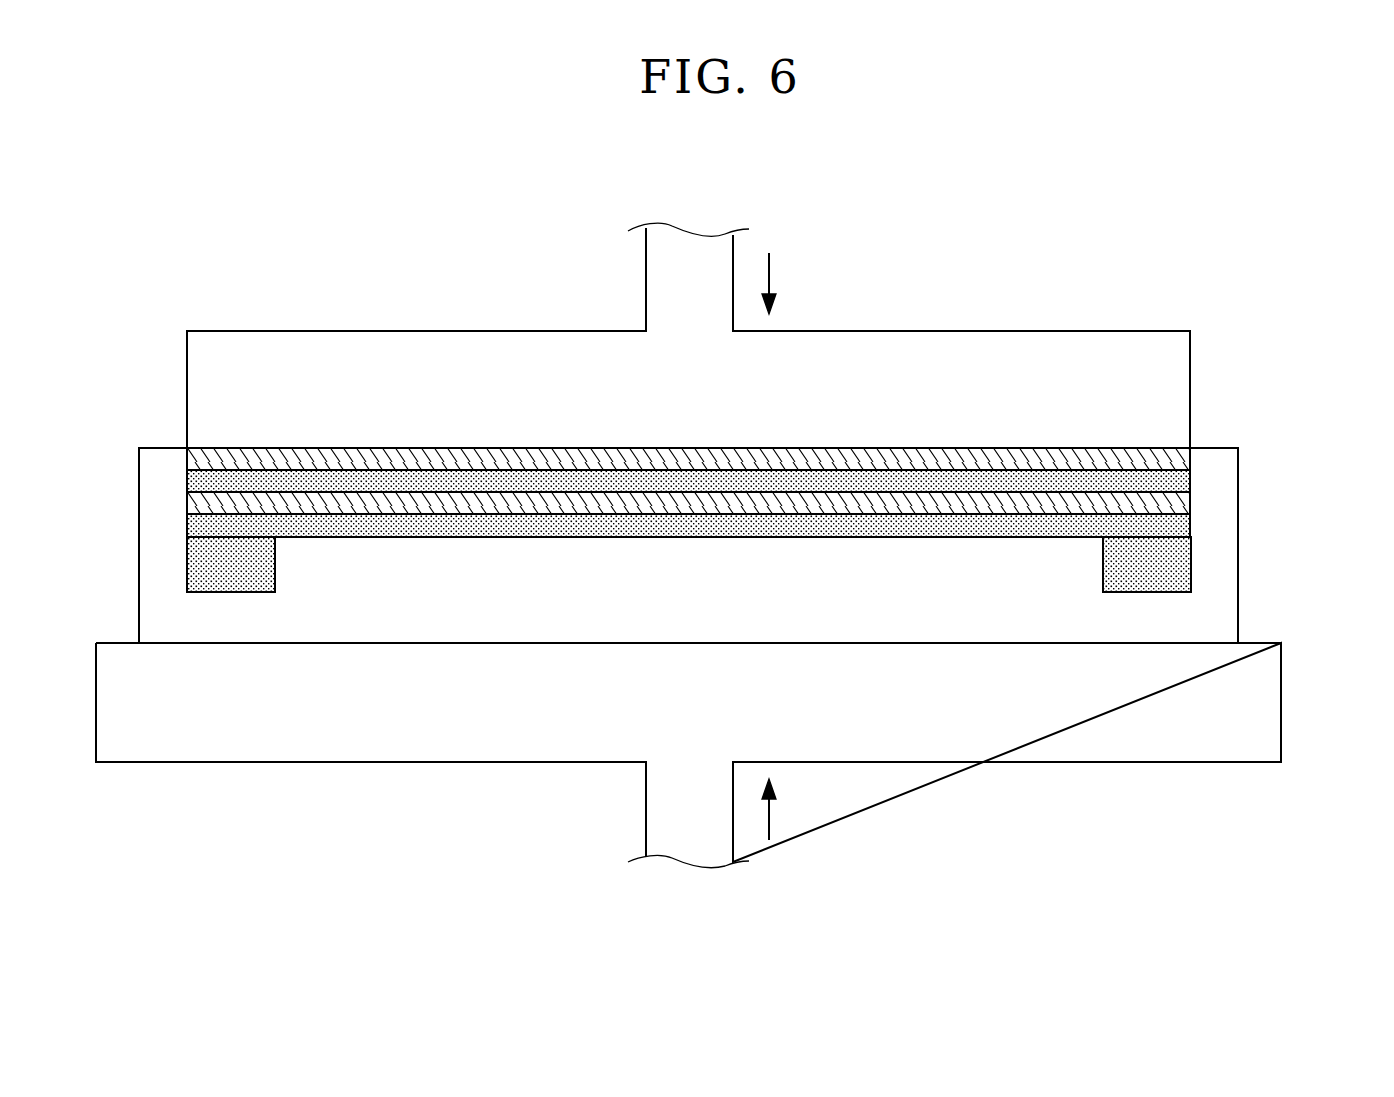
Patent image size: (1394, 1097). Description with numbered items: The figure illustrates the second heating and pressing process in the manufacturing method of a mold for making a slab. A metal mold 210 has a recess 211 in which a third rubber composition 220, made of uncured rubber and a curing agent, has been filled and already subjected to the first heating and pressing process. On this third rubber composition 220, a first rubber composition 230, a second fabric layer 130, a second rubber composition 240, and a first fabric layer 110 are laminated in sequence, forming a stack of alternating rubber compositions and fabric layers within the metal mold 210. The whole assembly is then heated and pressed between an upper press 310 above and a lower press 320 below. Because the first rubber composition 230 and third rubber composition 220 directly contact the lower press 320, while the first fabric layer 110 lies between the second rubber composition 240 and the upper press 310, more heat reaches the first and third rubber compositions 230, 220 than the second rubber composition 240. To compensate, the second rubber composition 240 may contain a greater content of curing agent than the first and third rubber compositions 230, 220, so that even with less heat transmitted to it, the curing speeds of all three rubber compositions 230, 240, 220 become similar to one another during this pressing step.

The first fabric layer 110 is at (1183, 452).
The second fabric layer 130 is at (1183, 500).
The metal mold 210 is at (1222, 603).
The recess 211 is at (1103, 572).
The third rubber composition 220 is at (1178, 563).
The first rubber composition 230 is at (1183, 525).
The second rubber composition 240 is at (1183, 478).
The upper press 310 is at (1102, 345).
The lower press 320 is at (1266, 698).